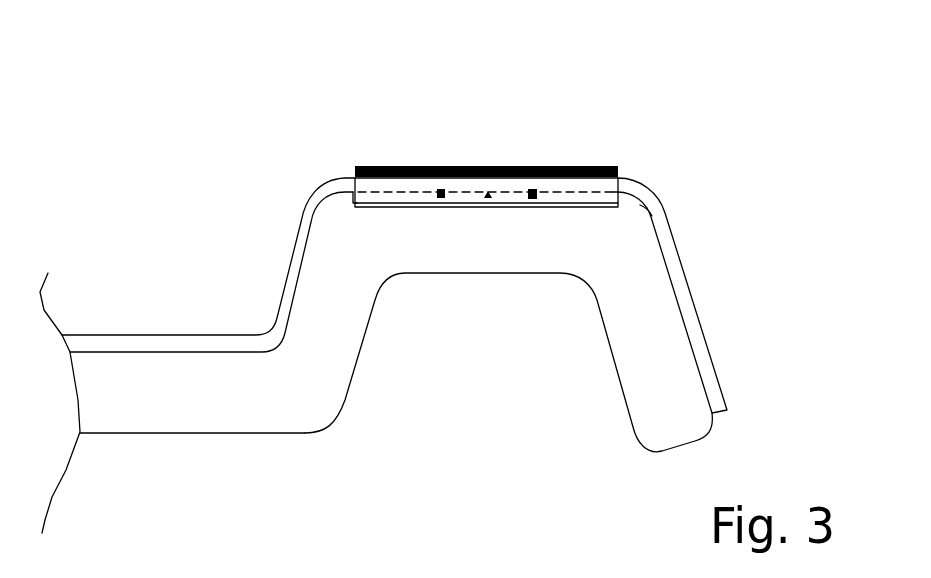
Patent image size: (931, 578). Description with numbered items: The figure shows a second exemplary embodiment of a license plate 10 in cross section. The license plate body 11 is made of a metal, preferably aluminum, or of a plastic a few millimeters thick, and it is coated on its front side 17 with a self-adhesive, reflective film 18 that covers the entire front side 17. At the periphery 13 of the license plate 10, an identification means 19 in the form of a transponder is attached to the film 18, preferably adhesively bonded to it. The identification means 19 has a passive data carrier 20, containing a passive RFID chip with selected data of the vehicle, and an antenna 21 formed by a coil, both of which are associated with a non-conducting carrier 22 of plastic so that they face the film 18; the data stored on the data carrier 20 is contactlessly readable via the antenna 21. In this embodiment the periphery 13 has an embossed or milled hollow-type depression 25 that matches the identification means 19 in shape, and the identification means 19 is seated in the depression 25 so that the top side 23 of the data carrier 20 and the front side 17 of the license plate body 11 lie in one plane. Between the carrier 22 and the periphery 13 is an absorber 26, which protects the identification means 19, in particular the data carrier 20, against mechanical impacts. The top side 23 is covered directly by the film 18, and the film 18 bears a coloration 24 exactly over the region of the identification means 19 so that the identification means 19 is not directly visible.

The license plate 10 is at (141, 244).
The license plate body 11 is at (203, 430).
The periphery 13 is at (543, 243).
The front side 17 is at (85, 350).
The film 18 is at (195, 342).
The identification means 19 is at (513, 122).
The data carrier 20 is at (487, 198).
The antenna 21 is at (438, 188).
The carrier 22 is at (632, 194).
The top side 23 is at (590, 186).
The coloration 24 is at (367, 166).
The depression 25 is at (352, 178).
The absorber 26 is at (601, 209).